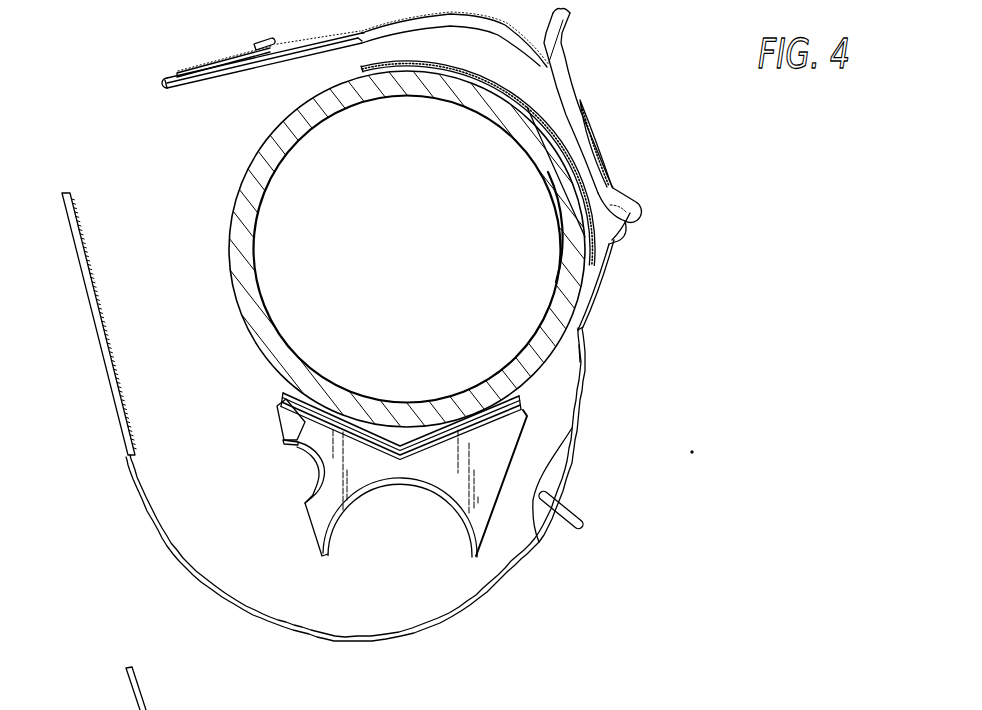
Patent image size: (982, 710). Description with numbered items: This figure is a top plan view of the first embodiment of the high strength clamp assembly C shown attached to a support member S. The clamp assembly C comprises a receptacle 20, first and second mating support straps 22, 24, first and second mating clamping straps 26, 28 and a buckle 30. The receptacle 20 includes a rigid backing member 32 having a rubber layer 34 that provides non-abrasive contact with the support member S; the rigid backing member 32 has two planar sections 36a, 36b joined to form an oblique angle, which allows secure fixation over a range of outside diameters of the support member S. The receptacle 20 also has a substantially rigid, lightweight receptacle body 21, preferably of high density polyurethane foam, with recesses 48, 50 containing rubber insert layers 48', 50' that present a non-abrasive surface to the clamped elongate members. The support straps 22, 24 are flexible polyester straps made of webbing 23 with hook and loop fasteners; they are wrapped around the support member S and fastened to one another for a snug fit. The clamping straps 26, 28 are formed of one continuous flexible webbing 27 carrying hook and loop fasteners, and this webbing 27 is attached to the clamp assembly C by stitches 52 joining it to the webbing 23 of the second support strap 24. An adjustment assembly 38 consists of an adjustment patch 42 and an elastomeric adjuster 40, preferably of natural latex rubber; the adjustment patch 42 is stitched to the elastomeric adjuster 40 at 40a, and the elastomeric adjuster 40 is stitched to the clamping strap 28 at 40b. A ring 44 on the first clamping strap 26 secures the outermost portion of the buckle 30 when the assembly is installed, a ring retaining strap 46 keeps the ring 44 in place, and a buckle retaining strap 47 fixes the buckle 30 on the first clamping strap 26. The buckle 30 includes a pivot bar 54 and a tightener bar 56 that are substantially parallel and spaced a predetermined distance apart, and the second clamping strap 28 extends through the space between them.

The receptacle 20 is at (277, 420).
The receptacle body 21 is at (523, 427).
The first mating support strap 22 is at (233, 183).
The webbing 23 is at (417, 447).
The second mating support strap 24 is at (527, 107).
The first mating clamping strap 26 is at (137, 497).
The webbing 27 is at (577, 352).
The second mating clamping strap 28 is at (490, 31).
The buckle 30 is at (573, 130).
The rigid backing member 32 is at (497, 410).
The rubber layer 34 is at (323, 410).
The planar section 36a is at (300, 441).
The planar section 36b is at (453, 430).
The adjustment assembly 38 is at (258, 45).
The elastomeric adjuster 40 is at (233, 78).
The stitching joint of adjustment patch to elastomeric adjuster 40a is at (172, 93).
The stitching joint of elastomeric adjuster to clamping strap 40b is at (372, 41).
The adjustment patch 42 is at (222, 63).
The ring 44 is at (580, 515).
The ring retaining strap 46 is at (558, 460).
The buckle retaining strap 47 is at (627, 237).
The recess 48 is at (286, 502).
The rubber insert layer 48' is at (273, 480).
The recess 50 is at (400, 529).
The rubber insert layer 50' is at (400, 517).
The stitches 52 is at (582, 327).
The pivot bar 54 is at (630, 208).
The tightener bar 56 is at (614, 177).
The support member S is at (558, 222).
The high strength clamp assembly C is at (603, 297).